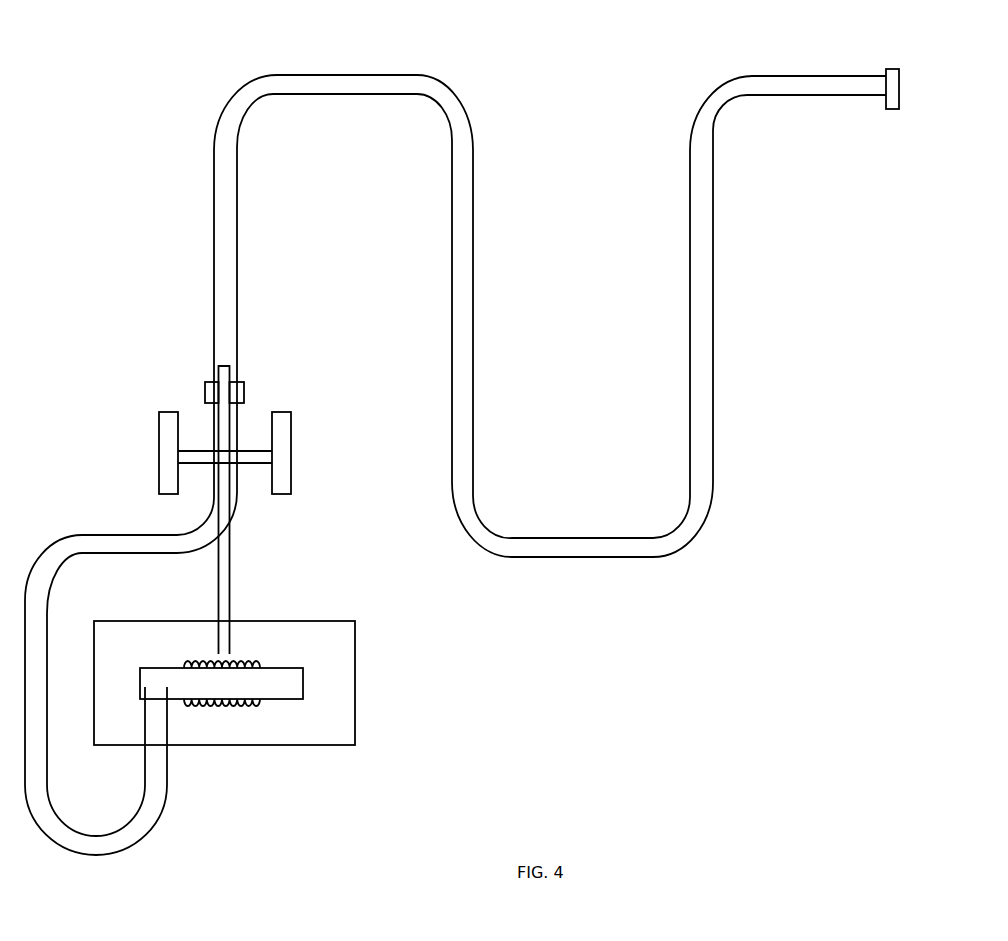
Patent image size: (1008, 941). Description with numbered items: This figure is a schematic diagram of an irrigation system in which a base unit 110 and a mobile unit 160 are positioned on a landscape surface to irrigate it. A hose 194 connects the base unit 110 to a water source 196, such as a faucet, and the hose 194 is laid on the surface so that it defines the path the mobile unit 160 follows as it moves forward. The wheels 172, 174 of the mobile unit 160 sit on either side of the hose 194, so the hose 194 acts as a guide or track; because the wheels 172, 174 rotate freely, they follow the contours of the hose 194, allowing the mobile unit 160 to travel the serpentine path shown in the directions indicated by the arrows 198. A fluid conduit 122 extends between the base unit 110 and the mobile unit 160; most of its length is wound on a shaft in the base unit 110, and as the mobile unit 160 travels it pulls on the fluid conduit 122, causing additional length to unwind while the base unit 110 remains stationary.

The base unit 110 is at (385, 680).
The fluid conduit 122 is at (229, 557).
The mobile unit 160 is at (136, 418).
The wheel 172 is at (215, 392).
The wheel 174 is at (238, 391).
The hose 194 is at (222, 203).
The water source 196 is at (892, 100).
The arrows 198 is at (232, 61).